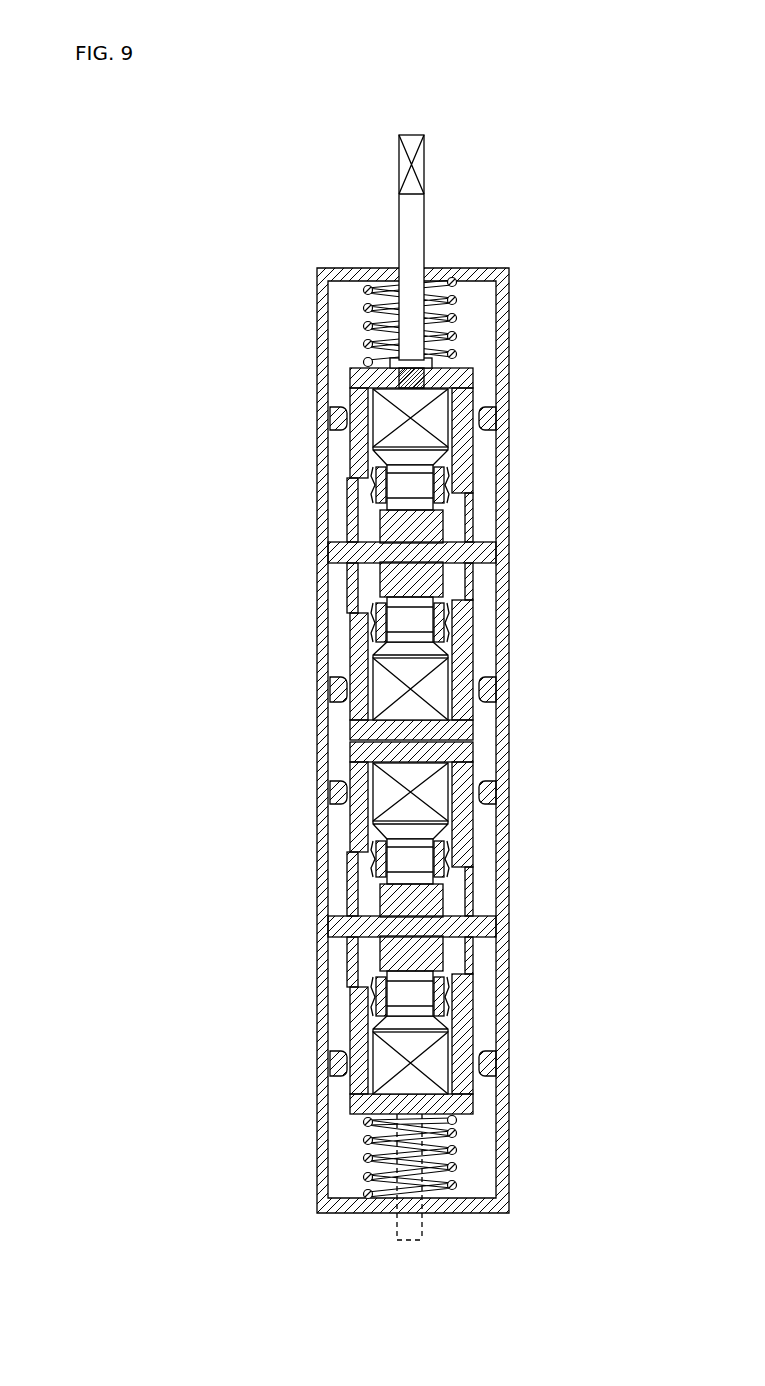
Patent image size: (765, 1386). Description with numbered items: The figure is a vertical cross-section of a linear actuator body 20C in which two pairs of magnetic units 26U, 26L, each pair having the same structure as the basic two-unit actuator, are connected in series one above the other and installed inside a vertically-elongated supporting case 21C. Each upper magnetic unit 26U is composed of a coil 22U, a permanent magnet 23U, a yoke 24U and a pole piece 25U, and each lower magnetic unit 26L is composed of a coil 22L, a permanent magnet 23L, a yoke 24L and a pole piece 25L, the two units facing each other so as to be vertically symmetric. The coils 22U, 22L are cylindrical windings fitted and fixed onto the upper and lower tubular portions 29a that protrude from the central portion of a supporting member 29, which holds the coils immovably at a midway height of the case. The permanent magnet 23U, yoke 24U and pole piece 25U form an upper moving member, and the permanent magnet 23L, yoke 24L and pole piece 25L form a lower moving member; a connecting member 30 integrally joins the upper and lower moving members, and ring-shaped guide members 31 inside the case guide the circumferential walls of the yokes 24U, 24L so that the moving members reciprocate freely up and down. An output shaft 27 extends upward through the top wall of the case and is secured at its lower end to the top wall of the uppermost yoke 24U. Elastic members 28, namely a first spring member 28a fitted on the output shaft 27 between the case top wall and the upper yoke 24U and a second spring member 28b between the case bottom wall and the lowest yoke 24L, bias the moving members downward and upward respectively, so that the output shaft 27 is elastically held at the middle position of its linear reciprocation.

The linear actuator body 20C is at (532, 258).
The vertically-elongated supporting case 21C is at (512, 370).
The coil 22U is at (447, 501).
The coil 22L is at (450, 622).
The permanent magnet 23U is at (437, 420).
The permanent magnet 23L is at (445, 705).
The yoke 24U is at (345, 385).
The yoke 24L is at (468, 1118).
The pole piece 25U is at (437, 478).
The pole piece 25L is at (436, 645).
The magnetic unit 26U is at (350, 356).
The magnetic unit 26L is at (342, 727).
The output shaft 27 is at (426, 160).
The elastic members 28 is at (321, 717).
The first spring member 28a is at (367, 288).
The second spring member 28b is at (372, 1158).
The supporting member 29 is at (413, 740).
The tubular portions 29a is at (370, 478).
The connecting member 30 is at (352, 580).
The guide members 31 is at (330, 418).